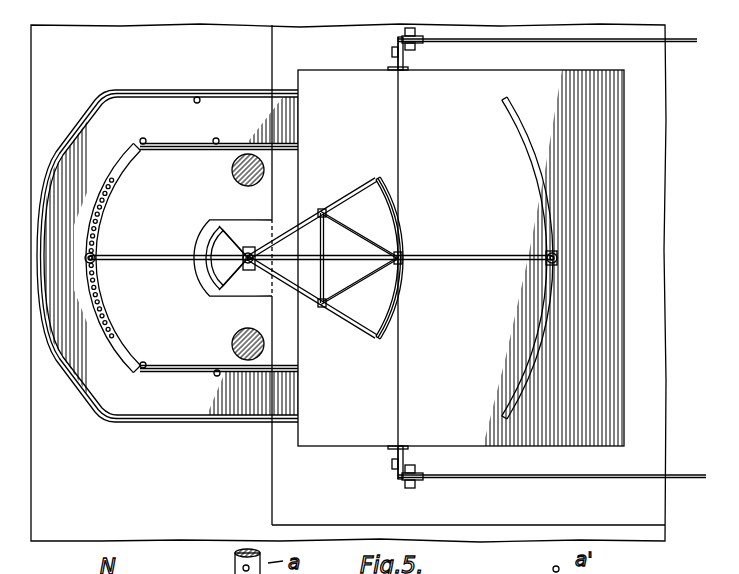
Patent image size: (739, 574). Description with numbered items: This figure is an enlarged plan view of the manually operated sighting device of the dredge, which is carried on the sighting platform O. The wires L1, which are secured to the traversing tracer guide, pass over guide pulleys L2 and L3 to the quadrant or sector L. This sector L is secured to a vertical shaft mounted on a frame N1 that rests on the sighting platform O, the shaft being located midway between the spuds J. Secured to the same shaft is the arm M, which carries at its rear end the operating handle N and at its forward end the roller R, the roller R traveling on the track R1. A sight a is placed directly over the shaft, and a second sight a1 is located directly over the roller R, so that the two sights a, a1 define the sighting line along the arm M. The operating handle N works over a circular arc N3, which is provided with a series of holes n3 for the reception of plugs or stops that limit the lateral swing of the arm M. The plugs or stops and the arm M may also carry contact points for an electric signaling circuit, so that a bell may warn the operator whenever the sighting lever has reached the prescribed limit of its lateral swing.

The sighting platform O is at (167, 256).
The circular arc N3 is at (124, 352).
The holes n3 is at (103, 323).
The operating handle N is at (95, 256).
The arm M is at (110, 268).
The frame N1 is at (199, 285).
The sight a is at (246, 271).
The spuds J is at (232, 172).
The quadrant or sector L is at (372, 180).
The wires L1 is at (398, 177).
The guide pulley L2 is at (378, 466).
The guide pulley L3 is at (424, 42).
The track R1 is at (532, 333).
The roller R is at (530, 265).
The sight a1 is at (548, 262).